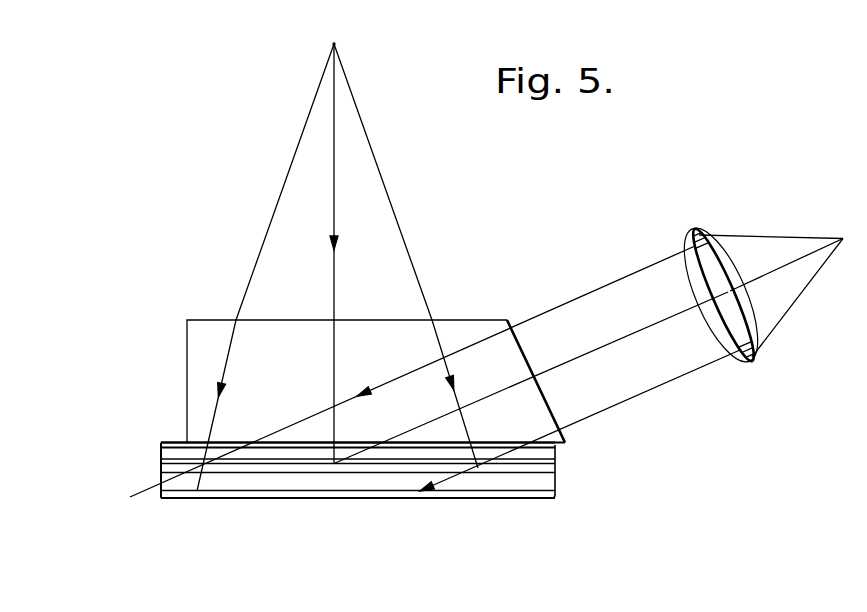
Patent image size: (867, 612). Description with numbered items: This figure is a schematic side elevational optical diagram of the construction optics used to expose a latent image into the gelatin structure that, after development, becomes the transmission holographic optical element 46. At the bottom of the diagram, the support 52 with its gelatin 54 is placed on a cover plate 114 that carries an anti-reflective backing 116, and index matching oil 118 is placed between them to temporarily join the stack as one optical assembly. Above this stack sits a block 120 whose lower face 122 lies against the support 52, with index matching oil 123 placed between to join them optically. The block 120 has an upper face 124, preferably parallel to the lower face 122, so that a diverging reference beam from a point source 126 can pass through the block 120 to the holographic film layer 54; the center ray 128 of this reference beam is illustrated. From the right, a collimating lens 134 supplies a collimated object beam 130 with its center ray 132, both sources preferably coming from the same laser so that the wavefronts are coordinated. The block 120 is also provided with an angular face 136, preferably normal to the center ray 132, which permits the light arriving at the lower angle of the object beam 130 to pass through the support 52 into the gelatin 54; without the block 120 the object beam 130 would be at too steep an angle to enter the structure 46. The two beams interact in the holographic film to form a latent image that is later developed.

The point source 126 is at (333, 44).
The upper face 124 is at (448, 320).
The center ray 128 is at (334, 303).
The block 120 is at (200, 313).
The angular face 136 is at (509, 319).
The collimated object beam 130 is at (573, 297).
The center ray 132 is at (661, 322).
The collimating lens 134 is at (702, 230).
The index matching oil 123 is at (177, 441).
The support 52 is at (167, 443).
The transmission holographic optical element 46 is at (140, 452).
The gelatin 54 is at (162, 465).
The lower face 122 is at (556, 447).
The index matching oil 118 is at (555, 472).
The anti-reflective backing 116 is at (472, 499).
The cover plate 114 is at (533, 487).